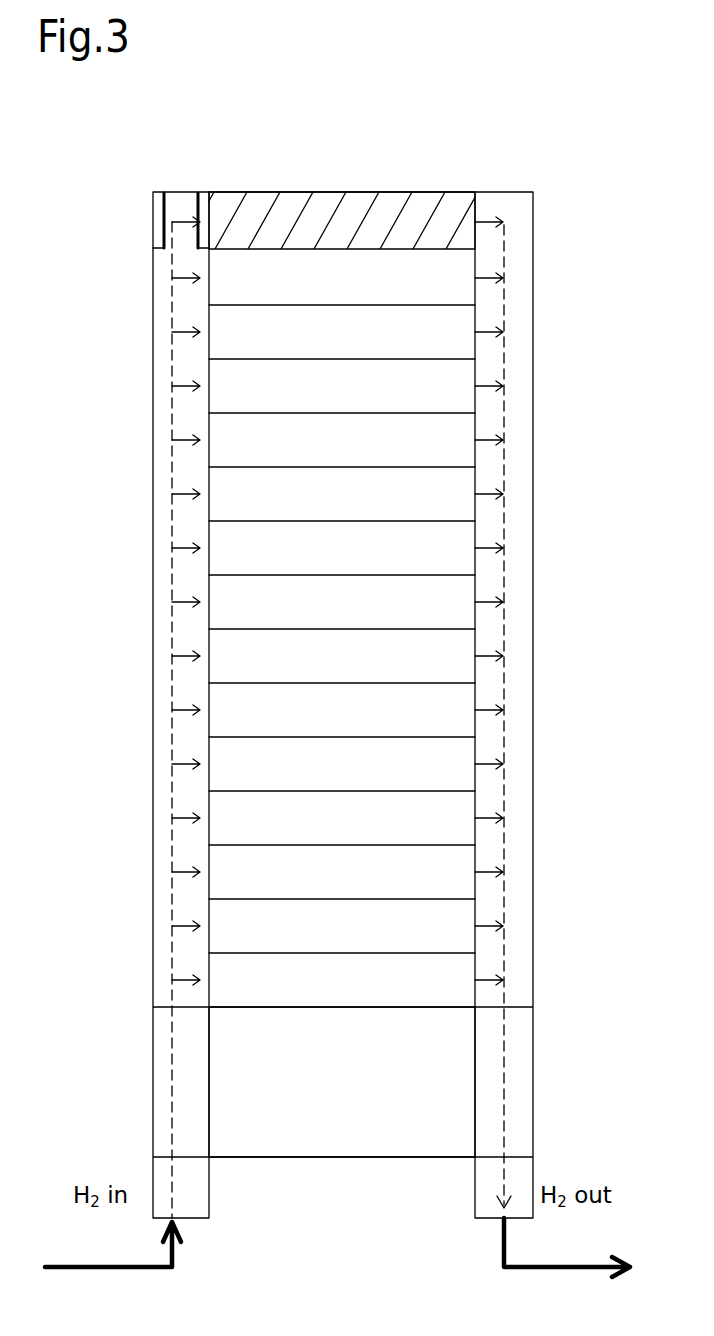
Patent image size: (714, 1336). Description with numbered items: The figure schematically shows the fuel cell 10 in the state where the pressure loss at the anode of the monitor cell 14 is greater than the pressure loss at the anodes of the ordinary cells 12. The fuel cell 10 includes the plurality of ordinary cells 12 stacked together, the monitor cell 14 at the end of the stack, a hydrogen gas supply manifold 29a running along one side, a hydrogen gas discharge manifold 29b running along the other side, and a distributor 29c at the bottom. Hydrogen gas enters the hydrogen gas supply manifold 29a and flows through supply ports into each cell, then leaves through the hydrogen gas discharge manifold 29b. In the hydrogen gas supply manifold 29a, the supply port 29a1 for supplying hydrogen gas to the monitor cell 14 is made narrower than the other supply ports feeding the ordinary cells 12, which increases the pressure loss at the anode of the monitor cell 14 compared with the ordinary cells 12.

The fuel cell 10 is at (628, 173).
The ordinary cells 12 is at (549, 250).
The monitor cell 14 is at (477, 238).
The hydrogen gas supply manifold 29a is at (209, 185).
The supply port 29a1 is at (140, 192).
The hydrogen gas discharge manifold 29b is at (533, 185).
The distributor 29c is at (403, 1158).